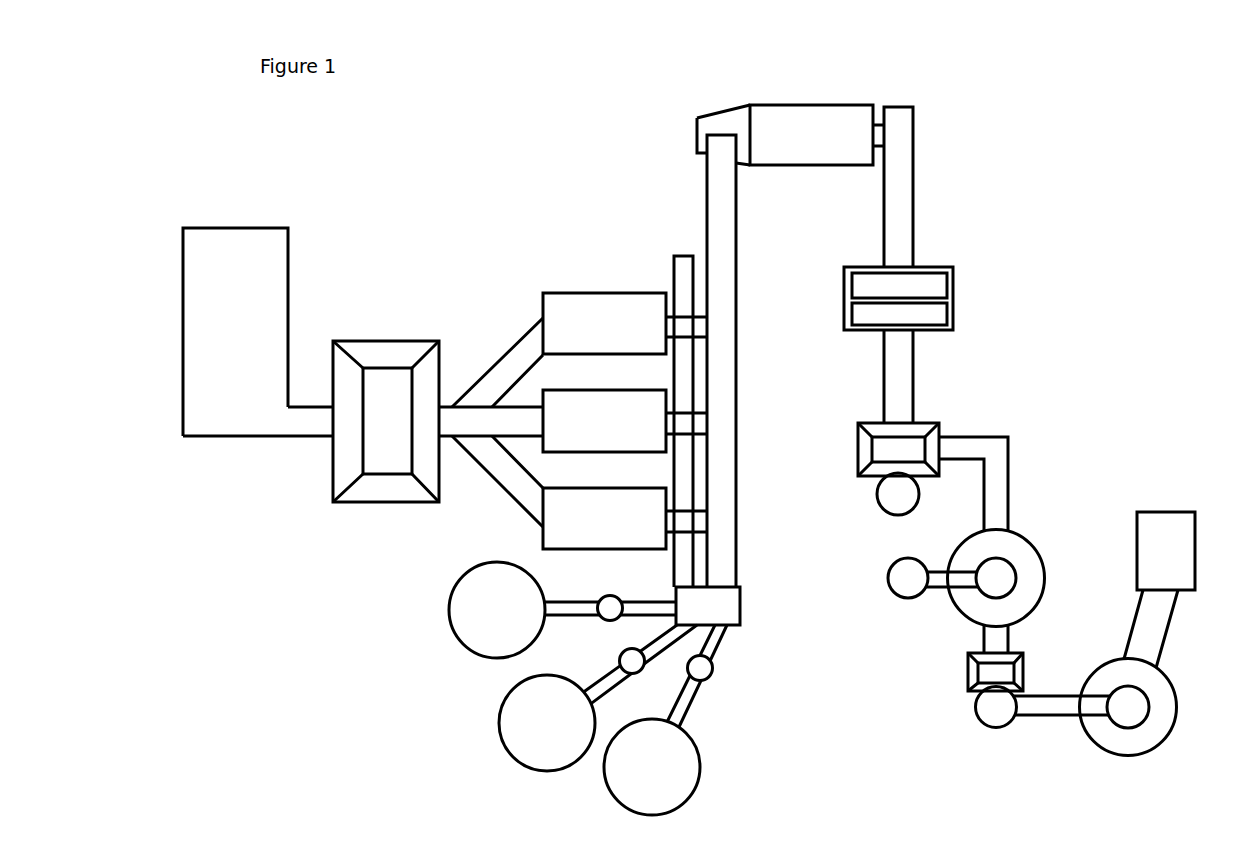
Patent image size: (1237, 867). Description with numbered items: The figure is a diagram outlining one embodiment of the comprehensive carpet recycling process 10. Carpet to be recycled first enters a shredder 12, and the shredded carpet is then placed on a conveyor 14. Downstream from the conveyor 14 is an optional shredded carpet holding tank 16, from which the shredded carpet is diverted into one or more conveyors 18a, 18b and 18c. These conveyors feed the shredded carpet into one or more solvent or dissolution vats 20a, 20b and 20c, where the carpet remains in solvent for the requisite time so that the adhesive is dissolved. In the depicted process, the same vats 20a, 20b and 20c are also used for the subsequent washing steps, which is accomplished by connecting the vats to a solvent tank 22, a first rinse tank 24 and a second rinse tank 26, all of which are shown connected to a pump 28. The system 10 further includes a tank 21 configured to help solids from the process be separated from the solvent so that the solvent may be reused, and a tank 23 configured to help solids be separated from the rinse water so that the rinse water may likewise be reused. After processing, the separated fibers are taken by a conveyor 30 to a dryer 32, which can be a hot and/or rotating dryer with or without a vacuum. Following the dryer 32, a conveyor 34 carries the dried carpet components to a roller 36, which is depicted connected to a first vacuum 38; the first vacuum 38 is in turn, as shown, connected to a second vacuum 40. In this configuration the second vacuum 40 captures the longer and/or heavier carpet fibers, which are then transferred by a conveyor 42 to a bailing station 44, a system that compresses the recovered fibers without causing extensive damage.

The carpet recycling process 10 is at (1073, 138).
The shredder 12 is at (240, 228).
The conveyor 14 is at (300, 405).
The shredded carpet holding tank 16 is at (388, 340).
The conveyor 18a is at (517, 333).
The conveyor 18b is at (497, 431).
The conveyor 18c is at (520, 508).
The solvent or dissolution vat 20a is at (622, 336).
The solvent or dissolution vat 20b is at (622, 433).
The solvent or dissolution vat 20c is at (622, 531).
The tank 21 is at (602, 597).
The solvent tank 22 is at (448, 632).
The tank 23 is at (617, 653).
The first rinse tank 24 is at (500, 745).
The second rinse tank 26 is at (605, 787).
The pump 28 is at (742, 600).
The conveyor 30 is at (738, 363).
The dryer 32 is at (822, 97).
The conveyor 34 is at (908, 105).
The roller 36 is at (940, 265).
The first vacuum 38 is at (930, 421).
The second vacuum 40 is at (877, 508).
The conveyor 42 is at (1045, 697).
The bailing station 44 is at (1188, 510).